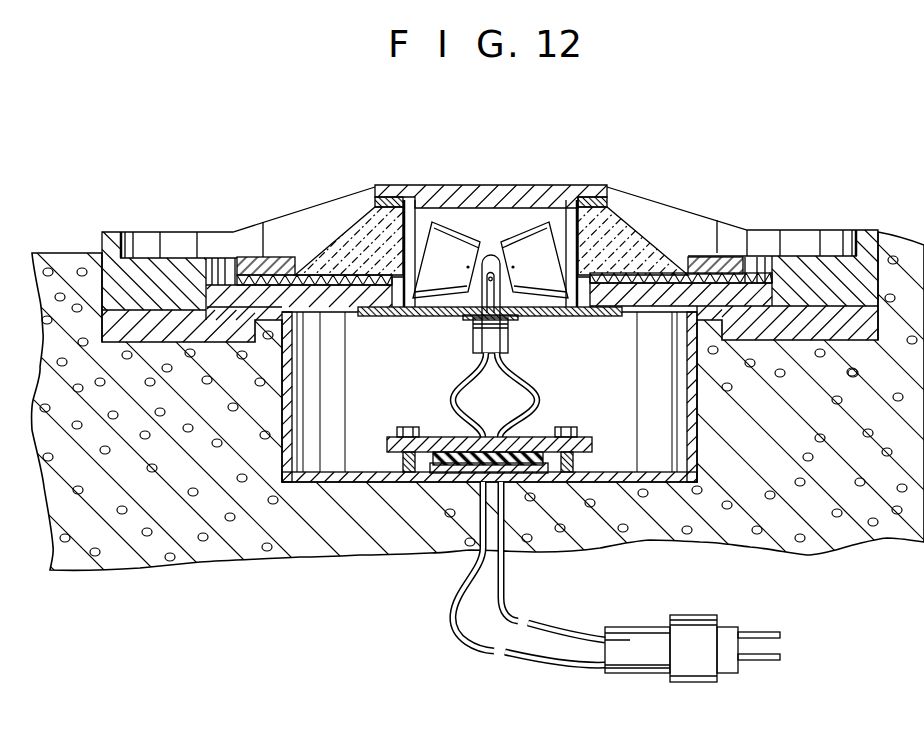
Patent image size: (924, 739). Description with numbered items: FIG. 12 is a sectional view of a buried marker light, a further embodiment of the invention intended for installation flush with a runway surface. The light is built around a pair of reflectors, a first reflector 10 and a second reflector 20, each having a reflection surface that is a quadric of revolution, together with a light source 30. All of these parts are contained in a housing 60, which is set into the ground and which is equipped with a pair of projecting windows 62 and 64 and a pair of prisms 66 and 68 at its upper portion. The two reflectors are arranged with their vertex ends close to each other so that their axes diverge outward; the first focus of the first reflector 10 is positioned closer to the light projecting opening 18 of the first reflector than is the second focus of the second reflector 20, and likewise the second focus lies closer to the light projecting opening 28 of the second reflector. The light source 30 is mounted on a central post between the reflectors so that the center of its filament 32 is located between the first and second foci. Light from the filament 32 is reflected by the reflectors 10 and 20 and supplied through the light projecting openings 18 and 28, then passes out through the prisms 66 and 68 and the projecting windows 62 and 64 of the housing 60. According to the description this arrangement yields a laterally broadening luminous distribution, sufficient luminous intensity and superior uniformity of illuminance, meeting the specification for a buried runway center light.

The first reflector 10 is at (448, 230).
The second reflector 20 is at (540, 242).
The filament 32 is at (491, 256).
The light source 30 is at (500, 298).
The light projecting opening 28 is at (577, 282).
The light projecting opening 18 is at (410, 280).
The housing 60 is at (559, 171).
The projecting window 62 is at (282, 223).
The projecting window 64 is at (688, 225).
The prism 66 is at (362, 223).
The prism 68 is at (622, 225).